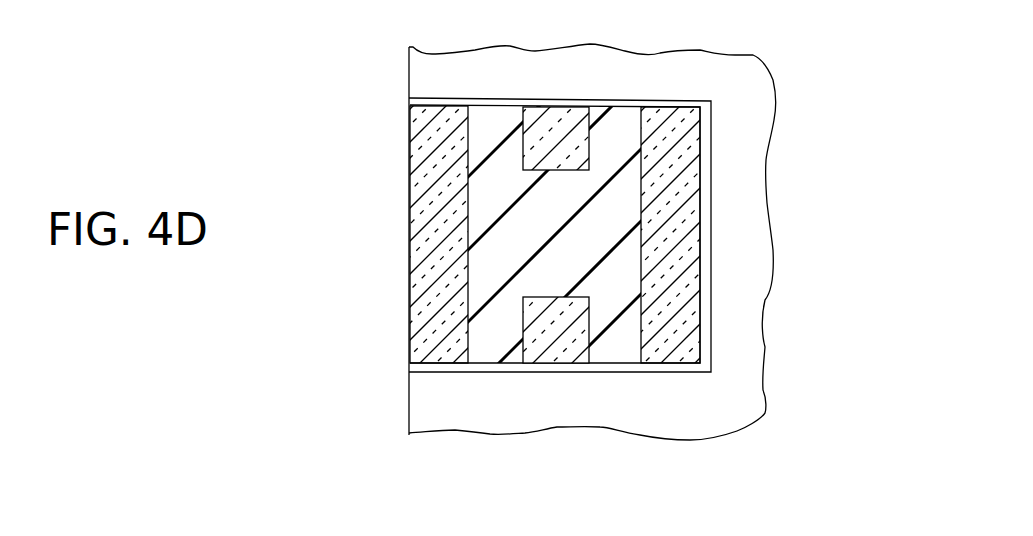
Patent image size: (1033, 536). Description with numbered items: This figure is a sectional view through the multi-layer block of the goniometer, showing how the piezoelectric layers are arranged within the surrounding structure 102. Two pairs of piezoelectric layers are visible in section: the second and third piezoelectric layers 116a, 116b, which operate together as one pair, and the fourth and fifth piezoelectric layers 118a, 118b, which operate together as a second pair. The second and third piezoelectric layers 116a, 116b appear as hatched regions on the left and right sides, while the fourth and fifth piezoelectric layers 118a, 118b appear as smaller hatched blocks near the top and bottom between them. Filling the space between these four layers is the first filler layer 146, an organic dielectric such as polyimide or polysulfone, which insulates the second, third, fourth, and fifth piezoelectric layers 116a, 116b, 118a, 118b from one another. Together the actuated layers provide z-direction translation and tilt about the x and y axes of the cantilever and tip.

The substrate 102 is at (747, 163).
The second piezoelectric layer 116a is at (420, 312).
The third piezoelectric layer 116b is at (672, 268).
The fourth piezoelectric layer 118a is at (543, 132).
The fifth piezoelectric layer 118b is at (552, 340).
The first filler layer 146 is at (482, 213).